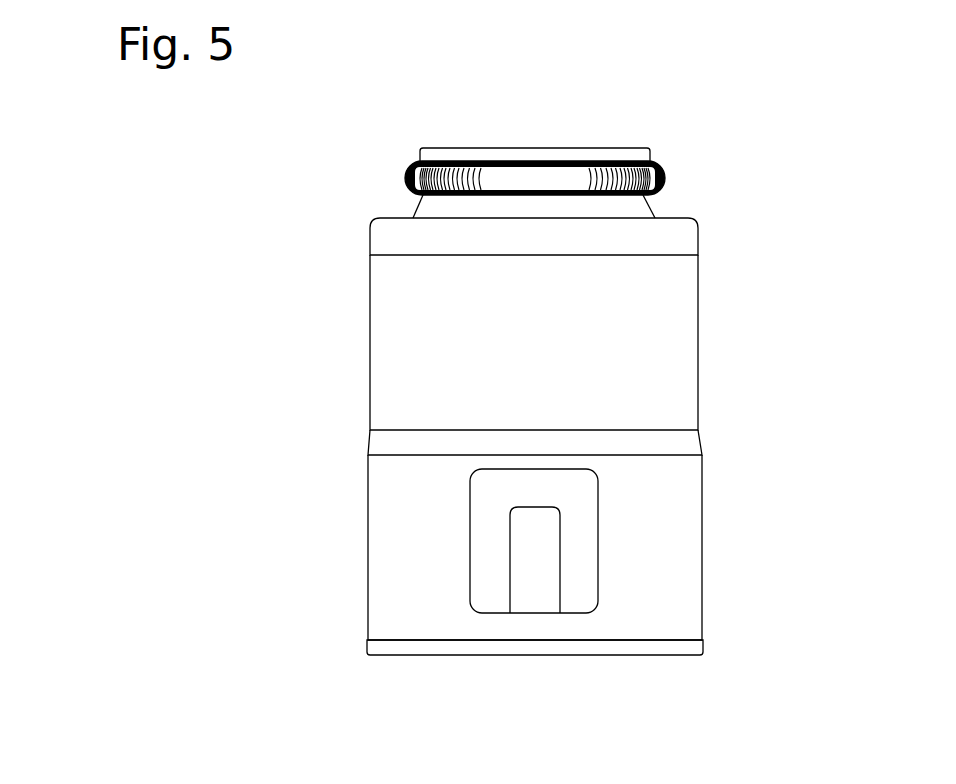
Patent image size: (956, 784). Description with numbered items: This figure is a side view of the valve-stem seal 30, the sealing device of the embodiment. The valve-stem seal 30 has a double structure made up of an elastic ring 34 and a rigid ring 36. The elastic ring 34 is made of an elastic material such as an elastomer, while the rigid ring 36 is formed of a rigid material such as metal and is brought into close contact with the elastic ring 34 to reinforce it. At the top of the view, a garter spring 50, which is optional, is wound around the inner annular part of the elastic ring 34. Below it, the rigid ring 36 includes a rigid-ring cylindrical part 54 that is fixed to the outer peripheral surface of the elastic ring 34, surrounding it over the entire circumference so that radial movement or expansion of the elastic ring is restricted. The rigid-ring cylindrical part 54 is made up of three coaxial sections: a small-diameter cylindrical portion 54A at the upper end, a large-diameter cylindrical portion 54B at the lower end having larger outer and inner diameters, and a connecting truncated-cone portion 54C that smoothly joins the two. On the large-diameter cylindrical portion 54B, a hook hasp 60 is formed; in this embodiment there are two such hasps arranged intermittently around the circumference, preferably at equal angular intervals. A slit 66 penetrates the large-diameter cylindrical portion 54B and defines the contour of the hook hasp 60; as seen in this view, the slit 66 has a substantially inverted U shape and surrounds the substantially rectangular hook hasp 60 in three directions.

The valve-stem seal 30 is at (247, 178).
The garter spring 50 is at (407, 178).
The elastic ring 34 is at (395, 227).
The rigid ring 36 is at (373, 268).
The rigid-ring cylindrical part 54 is at (375, 312).
The small-diameter cylindrical portion 54A is at (377, 350).
The connecting truncated-cone portion 54C is at (368, 445).
The large-diameter cylindrical portion 54B is at (368, 623).
The slit 66 is at (483, 496).
The hook hasp 60 is at (547, 580).